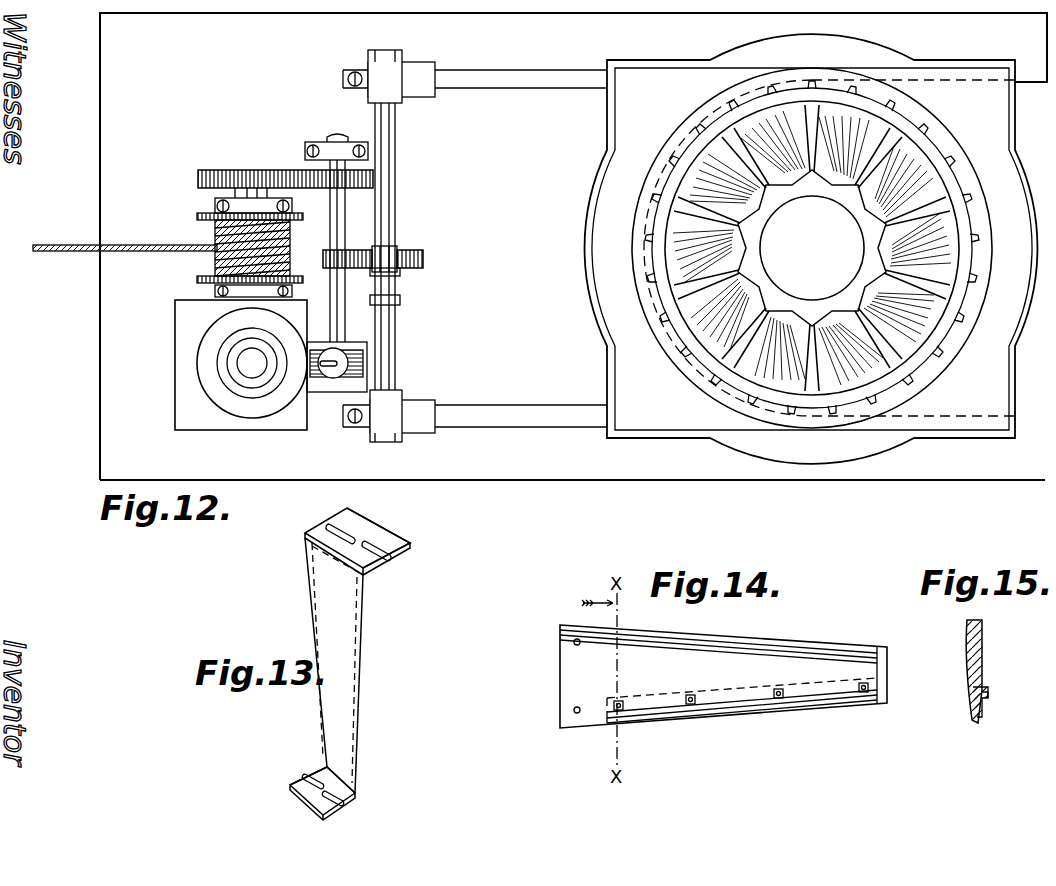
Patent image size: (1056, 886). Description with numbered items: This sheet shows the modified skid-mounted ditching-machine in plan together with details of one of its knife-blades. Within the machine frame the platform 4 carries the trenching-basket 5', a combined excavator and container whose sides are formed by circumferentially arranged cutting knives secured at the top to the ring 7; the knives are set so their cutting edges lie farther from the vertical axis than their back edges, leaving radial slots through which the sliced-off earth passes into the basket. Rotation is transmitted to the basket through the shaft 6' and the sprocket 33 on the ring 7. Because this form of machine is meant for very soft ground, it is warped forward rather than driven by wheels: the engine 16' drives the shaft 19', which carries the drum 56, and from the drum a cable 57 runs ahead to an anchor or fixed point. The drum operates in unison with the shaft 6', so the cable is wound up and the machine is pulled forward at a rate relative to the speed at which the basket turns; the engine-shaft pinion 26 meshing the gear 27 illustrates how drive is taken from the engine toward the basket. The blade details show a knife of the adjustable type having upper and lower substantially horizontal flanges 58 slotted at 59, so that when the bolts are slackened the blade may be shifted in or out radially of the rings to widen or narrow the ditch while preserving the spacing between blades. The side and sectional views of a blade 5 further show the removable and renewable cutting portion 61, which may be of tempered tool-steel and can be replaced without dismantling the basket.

In FIG. 12, the platform 4 is at (770, 249).
In FIG. 14, the trenching-basket 5 is at (723, 676).
In FIG. 15, the trenching-basket 5 is at (989, 671).
In FIG. 12, the basket 5' is at (812, 248).
In FIG. 13, the basket 5' is at (350, 664).
In FIG. 12, the shaft 6' is at (475, 246).
In FIG. 12, the ring 7 is at (960, 218).
In FIG. 12, the engine 16' is at (271, 365).
In FIG. 12, the shaft 19' is at (265, 186).
In FIG. 12, the pinion 26 is at (347, 262).
In FIG. 12, the gear 27 is at (420, 268).
In FIG. 12, the sprocket 33 is at (926, 366).
In FIG. 12, the drum 56 is at (200, 220).
In FIG. 12, the cable 57 is at (118, 246).
In FIG. 13, the flanges 58 is at (382, 562).
In FIG. 13, the slots 59 is at (358, 520).
In FIG. 14, the removable cutting portions 61 is at (760, 713).
In FIG. 15, the removable cutting portions 61 is at (978, 723).